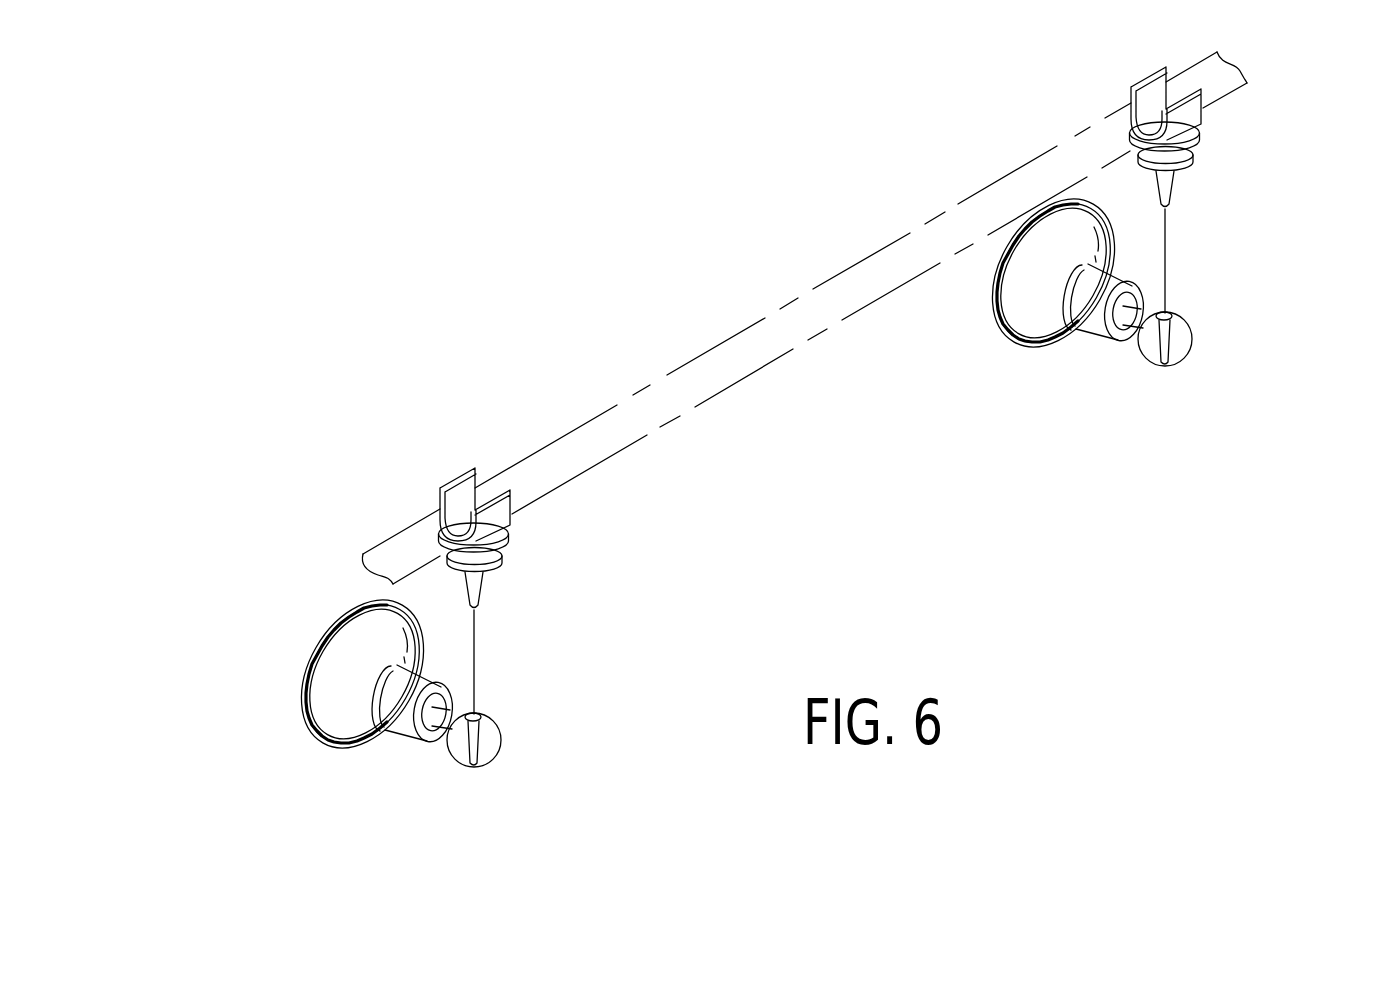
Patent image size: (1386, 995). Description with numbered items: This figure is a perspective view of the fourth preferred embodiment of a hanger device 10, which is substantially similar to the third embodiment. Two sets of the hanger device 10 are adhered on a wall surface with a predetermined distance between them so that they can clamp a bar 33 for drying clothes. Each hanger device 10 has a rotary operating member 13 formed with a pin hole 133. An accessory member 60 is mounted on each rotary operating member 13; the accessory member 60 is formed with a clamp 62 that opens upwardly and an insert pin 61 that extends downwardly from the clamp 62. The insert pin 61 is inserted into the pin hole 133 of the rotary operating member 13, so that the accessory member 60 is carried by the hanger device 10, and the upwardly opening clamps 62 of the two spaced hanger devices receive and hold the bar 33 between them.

The hanger device 10 is at (378, 746).
The rotary operating member 13 is at (404, 703).
The pin hole 133 is at (510, 728).
The bar 33 is at (838, 284).
The accessory member 60 is at (426, 512).
The insert pin 61 is at (477, 589).
The clamp 62 is at (498, 503).